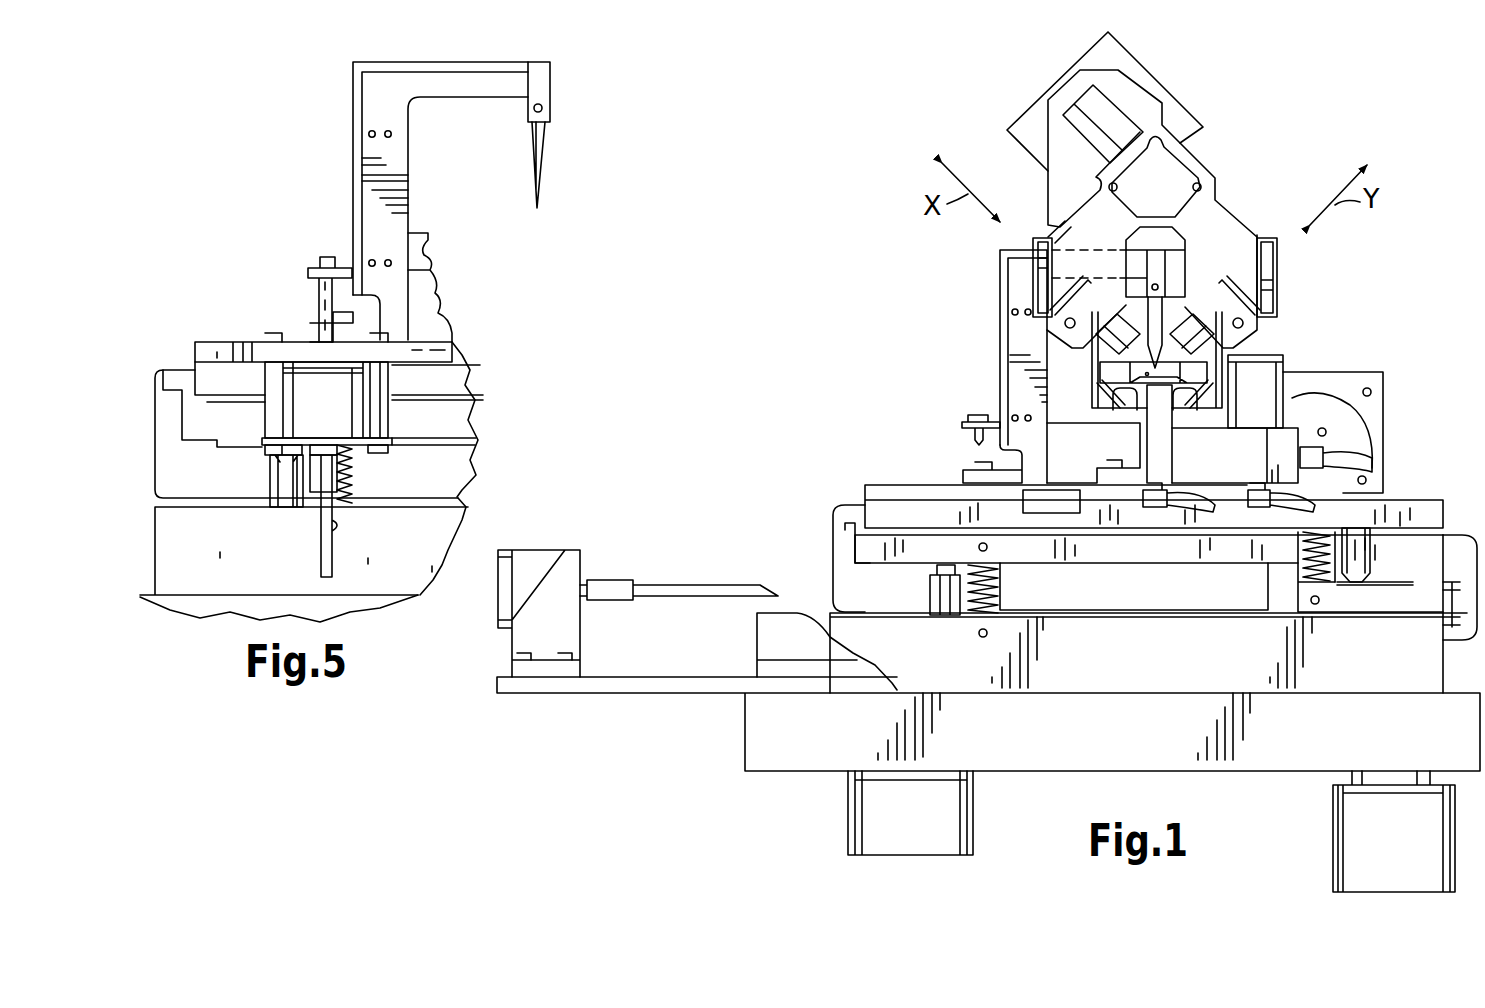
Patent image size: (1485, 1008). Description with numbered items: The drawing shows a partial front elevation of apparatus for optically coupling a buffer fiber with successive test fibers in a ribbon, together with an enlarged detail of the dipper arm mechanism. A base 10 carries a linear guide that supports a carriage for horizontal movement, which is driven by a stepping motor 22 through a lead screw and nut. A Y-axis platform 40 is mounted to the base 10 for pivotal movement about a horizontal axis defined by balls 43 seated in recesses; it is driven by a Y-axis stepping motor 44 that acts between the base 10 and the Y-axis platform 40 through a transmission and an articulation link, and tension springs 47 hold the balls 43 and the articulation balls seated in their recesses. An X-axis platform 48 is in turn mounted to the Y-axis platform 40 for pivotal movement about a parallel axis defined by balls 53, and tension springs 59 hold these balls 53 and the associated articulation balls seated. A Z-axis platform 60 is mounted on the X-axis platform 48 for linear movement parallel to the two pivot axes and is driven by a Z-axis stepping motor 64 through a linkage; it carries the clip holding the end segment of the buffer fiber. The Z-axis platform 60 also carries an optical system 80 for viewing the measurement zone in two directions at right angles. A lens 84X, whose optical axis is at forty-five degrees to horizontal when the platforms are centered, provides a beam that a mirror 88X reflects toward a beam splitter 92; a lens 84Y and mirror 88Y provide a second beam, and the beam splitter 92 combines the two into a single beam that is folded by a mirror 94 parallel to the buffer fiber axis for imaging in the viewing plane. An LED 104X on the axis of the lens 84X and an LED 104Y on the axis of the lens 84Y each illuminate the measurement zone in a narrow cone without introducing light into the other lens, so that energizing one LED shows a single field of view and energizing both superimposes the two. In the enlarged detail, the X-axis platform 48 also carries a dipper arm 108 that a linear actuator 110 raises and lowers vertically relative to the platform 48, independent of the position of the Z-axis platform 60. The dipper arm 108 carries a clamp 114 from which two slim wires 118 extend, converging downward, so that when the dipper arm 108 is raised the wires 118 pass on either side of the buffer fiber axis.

In FIG. 1, the base 10 is at (742, 737).
In FIG. 1, the stepping motor 22 is at (535, 550).
In FIG. 1, the Y-axis platform 40 is at (1145, 550).
In FIG. 1, the balls 43 is at (945, 573).
In FIG. 1, the Y-axis stepping motor 44 is at (1330, 846).
In FIG. 5, the tension springs 47 is at (354, 473).
In FIG. 1, the tension springs 47 is at (1000, 587).
In FIG. 5, the X-axis platform 48 is at (222, 342).
In FIG. 1, the X-axis platform 48 is at (888, 505).
In FIG. 1, the balls 53 is at (1354, 583).
In FIG. 1, the tension springs 59 is at (1296, 560).
In FIG. 1, the Z-axis platform 60 is at (1302, 304).
In FIG. 1, the Z-axis stepping motor 64 is at (1376, 372).
In FIG. 1, the optical system 80 is at (1226, 202).
In FIG. 1, the lens 84X is at (1097, 360).
In FIG. 1, the lens 84Y is at (1220, 347).
In FIG. 1, the mirror 88X is at (1043, 270).
In FIG. 1, the mirror 88Y is at (1270, 260).
In FIG. 1, the beam splitter 92 is at (1165, 173).
In FIG. 1, the mirror 94 is at (1110, 118).
In FIG. 1, the LED 104X is at (1197, 413).
In FIG. 1, the LED 104Y is at (1118, 410).
In FIG. 5, the dipper arm 108 is at (362, 160).
In FIG. 1, the dipper arm 108 is at (1000, 318).
In FIG. 5, the linear actuator 110 is at (302, 390).
In FIG. 5, the clamp 114 is at (543, 90).
In FIG. 1, the clamp 114 is at (1162, 268).
In FIG. 5, the wires 118 is at (532, 188).